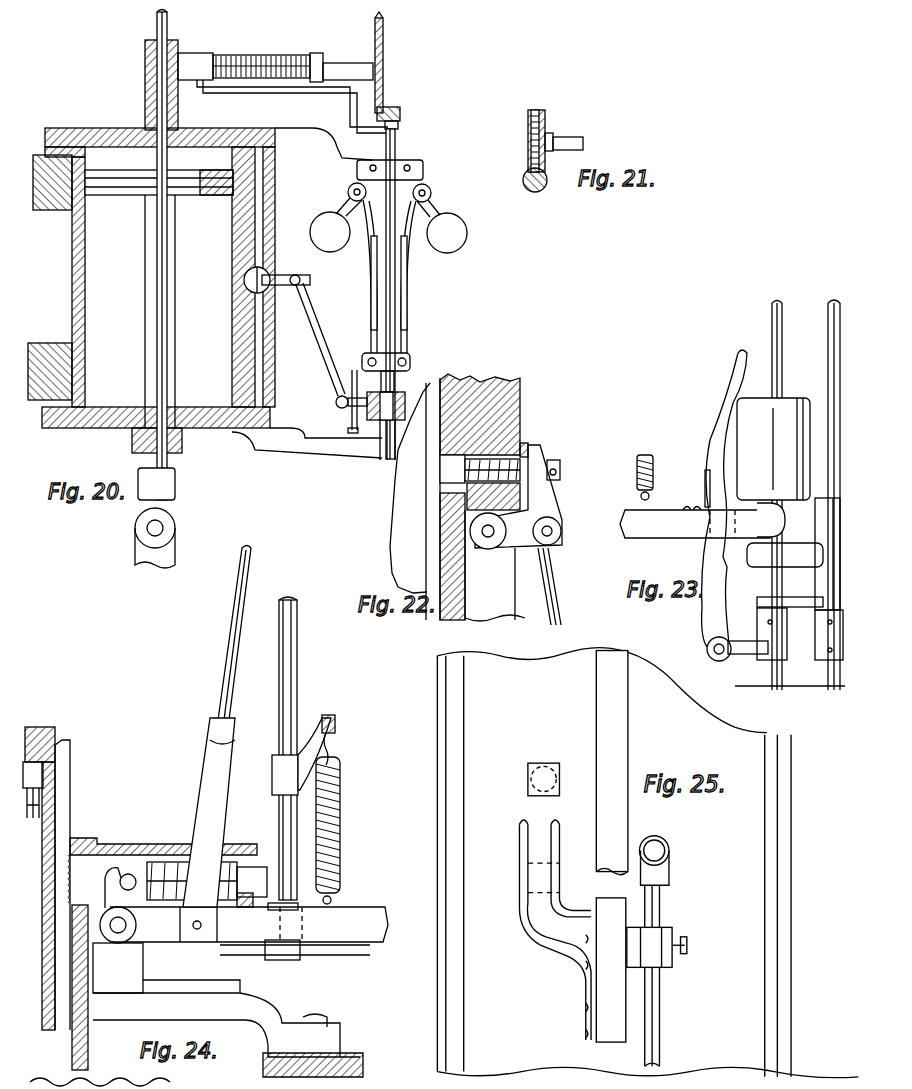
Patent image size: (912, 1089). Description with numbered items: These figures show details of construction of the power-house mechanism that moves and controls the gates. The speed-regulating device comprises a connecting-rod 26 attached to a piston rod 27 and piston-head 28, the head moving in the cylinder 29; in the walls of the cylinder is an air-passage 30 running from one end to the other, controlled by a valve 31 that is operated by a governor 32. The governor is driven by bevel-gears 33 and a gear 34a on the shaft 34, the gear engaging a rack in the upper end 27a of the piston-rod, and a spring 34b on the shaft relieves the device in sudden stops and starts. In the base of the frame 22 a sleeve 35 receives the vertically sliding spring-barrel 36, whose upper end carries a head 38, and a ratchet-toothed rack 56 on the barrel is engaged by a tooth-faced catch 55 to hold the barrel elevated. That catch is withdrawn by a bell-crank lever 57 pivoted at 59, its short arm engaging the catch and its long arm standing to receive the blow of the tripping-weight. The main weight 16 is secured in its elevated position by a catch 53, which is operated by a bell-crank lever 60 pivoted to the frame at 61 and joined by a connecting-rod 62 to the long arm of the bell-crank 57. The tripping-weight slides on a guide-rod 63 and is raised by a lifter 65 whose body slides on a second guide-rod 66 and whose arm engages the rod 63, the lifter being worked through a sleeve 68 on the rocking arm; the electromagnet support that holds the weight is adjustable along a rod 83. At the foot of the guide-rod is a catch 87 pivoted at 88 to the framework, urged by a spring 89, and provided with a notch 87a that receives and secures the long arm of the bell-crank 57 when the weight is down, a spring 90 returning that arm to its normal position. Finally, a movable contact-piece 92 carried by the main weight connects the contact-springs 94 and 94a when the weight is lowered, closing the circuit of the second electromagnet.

In FIG. 22, the main weight 16 is at (415, 499).
In FIG. 25, the main weight 16 is at (647, 863).
In FIG. 22, the frame 22 is at (500, 400).
In FIG. 20, the connecting-rod 26 is at (140, 553).
In FIG. 20, the piston-rod 27 is at (150, 350).
In FIG. 20, the upper end of the piston-rod 27a is at (160, 22).
In FIG. 21, the upper end of the piston-rod 27a is at (523, 182).
In FIG. 20, the piston-head 28 is at (125, 185).
In FIG. 20, the cylinder 29 is at (205, 249).
In FIG. 20, the air-passage 30 is at (262, 362).
In FIG. 20, the valve 31 is at (268, 270).
In FIG. 20, the governor 32 is at (395, 300).
In FIG. 20, the bevel-gears 33 is at (385, 82).
In FIG. 21, the shaft 34 is at (565, 136).
In FIG. 21, the gear 34a is at (545, 112).
In FIG. 20, the spring 34b is at (278, 38).
In FIG. 24, the sleeve 35 is at (80, 1045).
In FIG. 24, the spring-barrel 36 is at (39, 897).
In FIG. 24, the head 38 is at (70, 795).
In FIG. 22, the catch 53 is at (440, 485).
In FIG. 24, the catch 53 is at (207, 884).
In FIG. 24, the tooth-faced catch 55 is at (92, 870).
In FIG. 24, the ratchet-toothed rack 56 is at (60, 810).
In FIG. 23, the bell-crank lever 57 is at (670, 542).
In FIG. 24, the bell-crank lever 57 is at (360, 925).
In FIG. 24, the pivot 59 is at (118, 927).
In FIG. 22, the bell-crank lever 60 is at (540, 500).
In FIG. 22, the pivot 61 is at (488, 535).
In FIG. 22, the connecting-rod 62 is at (540, 590).
In FIG. 24, the connecting-rod 62 is at (240, 610).
In FIG. 23, the guide-rod 63 is at (772, 325).
In FIG. 23, the lifter 65 is at (790, 592).
In FIG. 23, the guide-rod 66 is at (834, 335).
In FIG. 23, the sleeve 68 is at (773, 449).
In FIG. 24, the rod 83 is at (290, 670).
In FIG. 23, the catch 87 is at (733, 380).
In FIG. 23, the notch 87a is at (724, 565).
In FIG. 23, the pivot 88 is at (719, 661).
In FIG. 25, the pivot 88 is at (657, 951).
In FIG. 23, the spring 89 is at (704, 490).
In FIG. 23, the spring 90 is at (655, 470).
In FIG. 24, the spring 90 is at (340, 815).
In FIG. 25, the movable contact-piece 92 is at (532, 760).
In FIG. 25, the contact-spring 94 is at (556, 830).
In FIG. 25, the contact-spring 94a is at (520, 835).